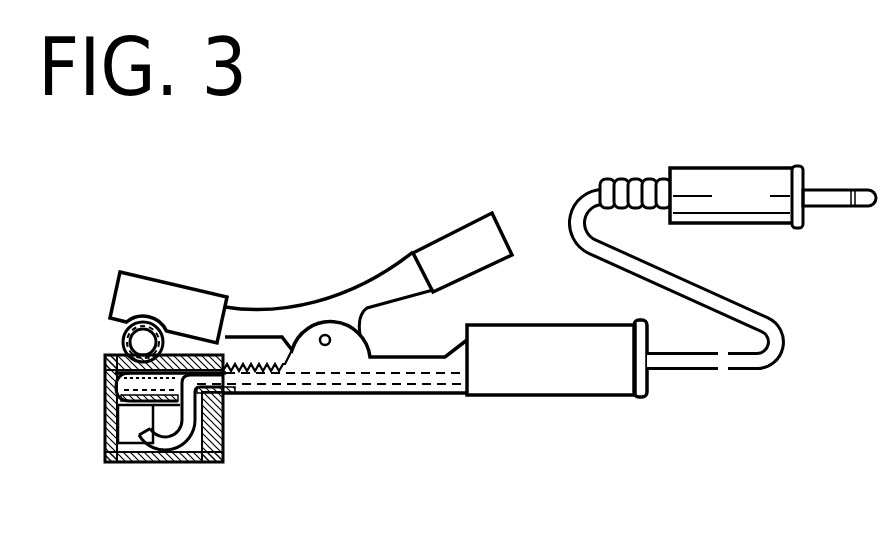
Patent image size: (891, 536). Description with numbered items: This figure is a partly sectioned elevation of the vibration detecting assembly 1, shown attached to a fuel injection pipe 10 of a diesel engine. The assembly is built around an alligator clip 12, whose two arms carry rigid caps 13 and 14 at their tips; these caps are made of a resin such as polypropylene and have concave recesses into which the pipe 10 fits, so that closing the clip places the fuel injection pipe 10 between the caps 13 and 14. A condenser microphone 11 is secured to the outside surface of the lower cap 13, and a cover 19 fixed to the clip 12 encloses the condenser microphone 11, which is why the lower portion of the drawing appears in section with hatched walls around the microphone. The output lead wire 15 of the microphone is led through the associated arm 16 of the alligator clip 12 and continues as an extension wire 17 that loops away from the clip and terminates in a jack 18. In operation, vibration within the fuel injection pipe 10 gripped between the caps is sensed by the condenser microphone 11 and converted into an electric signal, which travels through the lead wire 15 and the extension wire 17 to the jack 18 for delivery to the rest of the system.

The vibration detecting assembly 1 is at (332, 410).
The fuel injection pipe 10 is at (128, 337).
The condenser microphone 11 is at (130, 422).
The alligator clip 12 is at (268, 320).
The lower cap 13 is at (112, 372).
The cap 14 is at (170, 300).
The output lead wire 15 is at (192, 463).
The arm 16 is at (560, 392).
The extension wire 17 is at (733, 294).
The jack 18 is at (723, 188).
The cover 19 is at (107, 457).